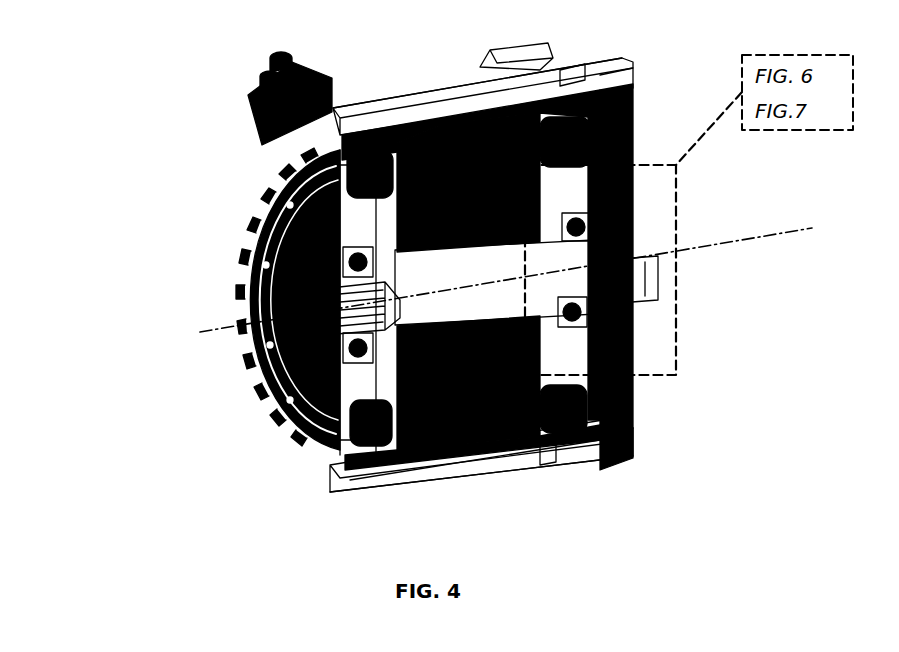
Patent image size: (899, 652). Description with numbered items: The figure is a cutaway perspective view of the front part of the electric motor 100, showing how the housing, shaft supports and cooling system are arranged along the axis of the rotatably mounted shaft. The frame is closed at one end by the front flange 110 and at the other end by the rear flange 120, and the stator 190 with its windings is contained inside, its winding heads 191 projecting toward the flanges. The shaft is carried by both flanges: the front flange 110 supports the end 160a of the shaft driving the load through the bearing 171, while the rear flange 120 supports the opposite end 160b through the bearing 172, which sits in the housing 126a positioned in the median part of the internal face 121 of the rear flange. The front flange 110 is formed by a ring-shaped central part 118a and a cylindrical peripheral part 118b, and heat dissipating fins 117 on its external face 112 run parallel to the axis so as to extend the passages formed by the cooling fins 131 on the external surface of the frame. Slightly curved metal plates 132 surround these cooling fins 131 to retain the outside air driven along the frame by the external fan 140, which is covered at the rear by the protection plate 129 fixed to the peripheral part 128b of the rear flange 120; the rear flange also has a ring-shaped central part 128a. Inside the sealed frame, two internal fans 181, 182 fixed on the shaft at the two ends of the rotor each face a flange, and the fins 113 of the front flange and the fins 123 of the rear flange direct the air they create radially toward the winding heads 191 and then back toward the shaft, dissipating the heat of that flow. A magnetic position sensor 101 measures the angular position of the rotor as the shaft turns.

The electric motor 100 is at (140, 62).
The magnetic position sensor 101 is at (653, 250).
The front flange 110 is at (283, 258).
The external face 112 is at (325, 413).
The fins 113 is at (258, 213).
The heat dissipating fins 117 is at (248, 92).
The central part 118a is at (300, 380).
The peripheral part 118b is at (250, 158).
The rear flange 120 is at (618, 158).
The internal face 121 is at (597, 153).
The fins 123 is at (610, 385).
The housing 126a is at (545, 440).
The central part 128a is at (596, 430).
The peripheral part 128b is at (585, 62).
The protection plate 129 is at (640, 355).
The cooling fins 131 is at (373, 97).
The metal plates 132 is at (440, 97).
The external fan 140 is at (627, 422).
The end of the rotation shaft driving the load 160a is at (262, 330).
The end of the rotation shaft opposite the load 160b is at (640, 305).
The bearing 171 is at (262, 290).
The bearing 172 is at (583, 217).
The internal fan 181 is at (330, 440).
The internal fan 182 is at (523, 400).
The stator 190 is at (460, 143).
The winding heads 191 is at (620, 77).